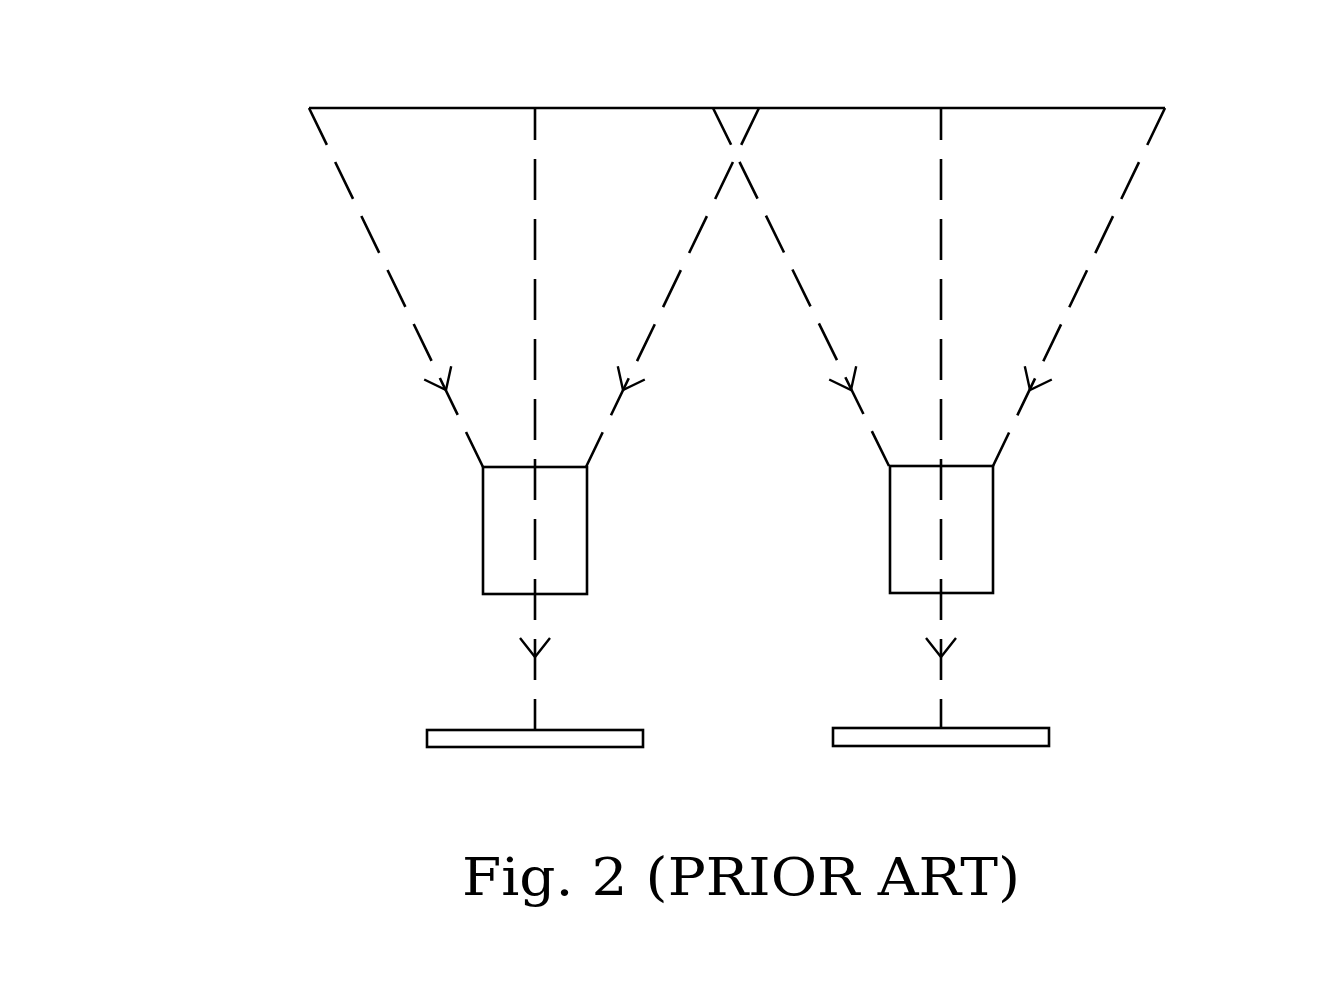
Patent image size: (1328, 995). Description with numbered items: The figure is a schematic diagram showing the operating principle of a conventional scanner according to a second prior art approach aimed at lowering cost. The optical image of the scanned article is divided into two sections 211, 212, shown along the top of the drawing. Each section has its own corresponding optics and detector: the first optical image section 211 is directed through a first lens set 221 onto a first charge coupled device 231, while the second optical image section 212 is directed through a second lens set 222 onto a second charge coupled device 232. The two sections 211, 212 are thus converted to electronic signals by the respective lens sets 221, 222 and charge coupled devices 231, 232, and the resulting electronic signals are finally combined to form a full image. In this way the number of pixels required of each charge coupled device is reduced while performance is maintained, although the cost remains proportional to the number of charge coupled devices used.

The optical image section 211 is at (403, 108).
The optical image section 212 is at (1067, 108).
The lens set 221 is at (500, 532).
The lens set 222 is at (977, 530).
The charge coupled device 231 is at (460, 738).
The charge coupled device 232 is at (1017, 737).